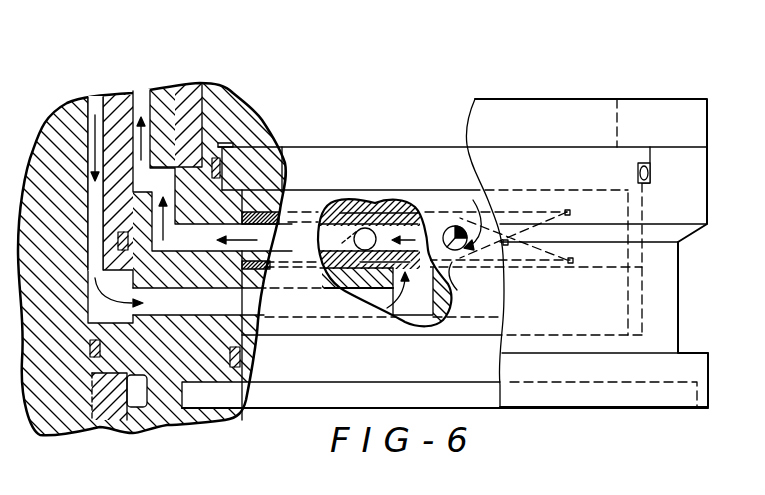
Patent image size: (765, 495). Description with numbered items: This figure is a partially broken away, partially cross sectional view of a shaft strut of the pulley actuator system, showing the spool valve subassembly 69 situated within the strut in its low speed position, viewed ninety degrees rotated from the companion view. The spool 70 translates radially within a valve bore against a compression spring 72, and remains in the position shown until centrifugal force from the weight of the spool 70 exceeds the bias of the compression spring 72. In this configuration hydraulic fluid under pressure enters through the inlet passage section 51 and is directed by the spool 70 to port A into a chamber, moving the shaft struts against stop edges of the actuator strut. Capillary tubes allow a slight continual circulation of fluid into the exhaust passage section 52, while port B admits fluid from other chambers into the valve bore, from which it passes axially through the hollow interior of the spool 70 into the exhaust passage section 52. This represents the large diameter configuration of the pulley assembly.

The inlet passage section 51 is at (97, 98).
The exhaust passage section 52 is at (134, 91).
The spool valve subassembly 69 is at (479, 95).
The spool 70 is at (383, 215).
The compression spring 72 is at (461, 224).